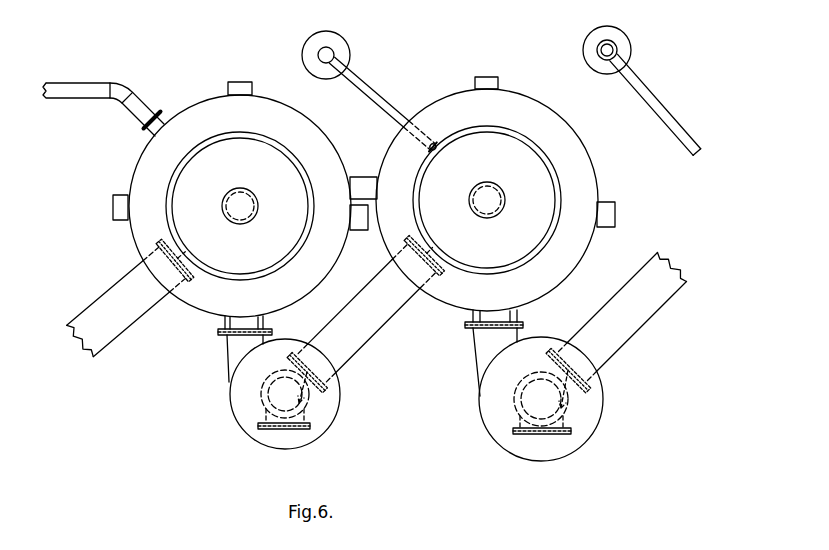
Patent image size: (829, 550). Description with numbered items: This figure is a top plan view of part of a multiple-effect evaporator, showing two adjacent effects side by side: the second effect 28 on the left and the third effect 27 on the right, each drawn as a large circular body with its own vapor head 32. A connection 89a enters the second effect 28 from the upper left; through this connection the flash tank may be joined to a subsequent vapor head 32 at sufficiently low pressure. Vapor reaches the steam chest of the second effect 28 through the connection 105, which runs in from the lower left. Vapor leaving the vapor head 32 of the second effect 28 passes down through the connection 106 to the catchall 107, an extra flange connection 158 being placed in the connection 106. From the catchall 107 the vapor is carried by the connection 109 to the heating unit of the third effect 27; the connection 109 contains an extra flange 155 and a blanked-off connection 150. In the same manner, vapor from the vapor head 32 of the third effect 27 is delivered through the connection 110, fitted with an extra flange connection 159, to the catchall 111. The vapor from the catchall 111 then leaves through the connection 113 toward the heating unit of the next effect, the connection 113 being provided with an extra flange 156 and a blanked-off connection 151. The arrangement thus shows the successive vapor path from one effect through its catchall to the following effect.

The third effect 27 is at (546, 97).
The second effect 28 is at (321, 119).
The vapor head 32 is at (145, 165).
The connection 89a is at (78, 86).
The connection 105 is at (93, 302).
The connection 106 is at (226, 355).
The catchall 107 is at (240, 427).
The connection 109 is at (357, 355).
The connection 110 is at (480, 353).
The catchall 111 is at (490, 435).
The connection 113 is at (618, 348).
The blanked-off connection 150 is at (277, 432).
The blanked-off connection 151 is at (538, 434).
The extra flange 155 is at (333, 395).
The extra flange 156 is at (592, 392).
The extra flange connection 158 is at (220, 334).
The extra flange connection 159 is at (465, 327).